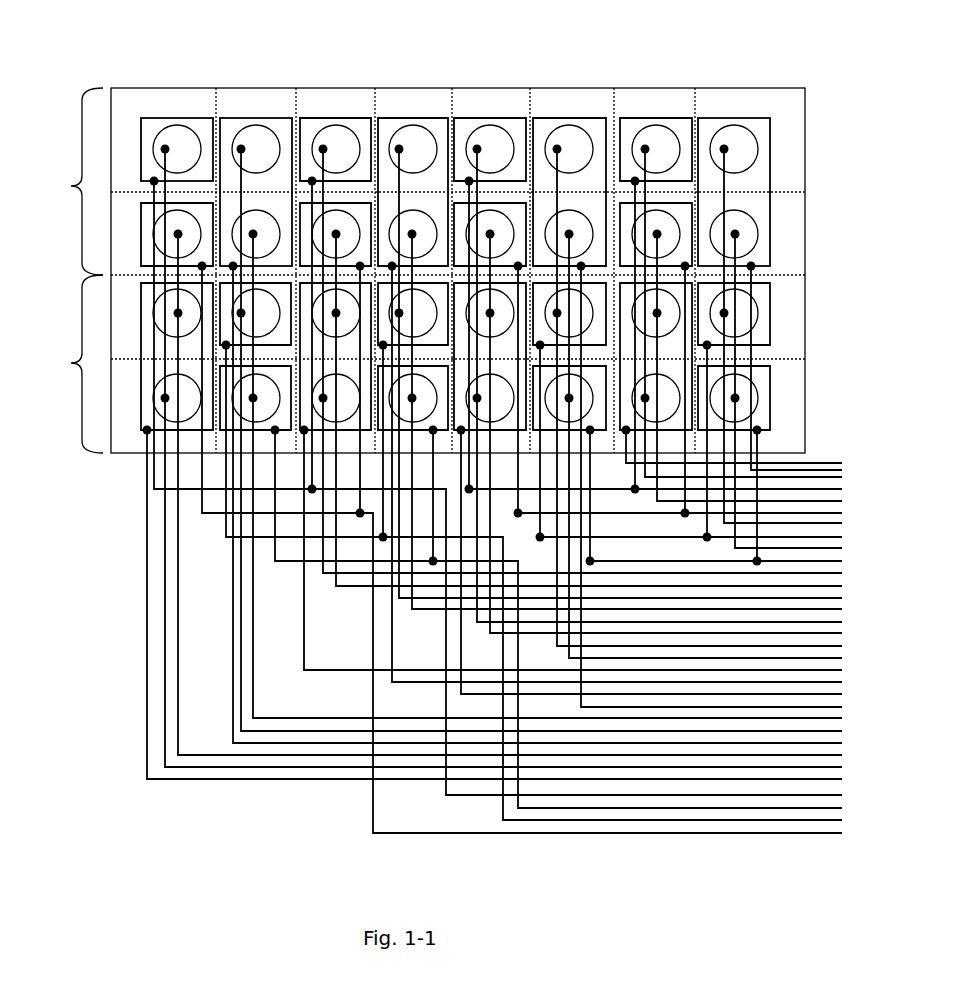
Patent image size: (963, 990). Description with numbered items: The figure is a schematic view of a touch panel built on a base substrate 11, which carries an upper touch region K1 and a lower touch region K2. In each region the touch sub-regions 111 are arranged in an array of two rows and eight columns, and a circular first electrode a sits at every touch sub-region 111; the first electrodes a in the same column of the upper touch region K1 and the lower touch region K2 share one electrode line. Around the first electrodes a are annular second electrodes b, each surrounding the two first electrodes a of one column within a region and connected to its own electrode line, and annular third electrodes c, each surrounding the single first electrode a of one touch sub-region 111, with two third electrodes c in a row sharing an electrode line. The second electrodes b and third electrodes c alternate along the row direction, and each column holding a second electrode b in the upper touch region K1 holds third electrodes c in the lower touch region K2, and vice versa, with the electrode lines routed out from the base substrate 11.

The base substrate 11 is at (804, 88).
The touch sub-region 111 is at (733, 100).
The first electrode a is at (253, 123).
The second electrode b is at (233, 118).
The third electrode c is at (145, 118).
The upper touch region K1 is at (71, 181).
The lower touch region K2 is at (71, 364).